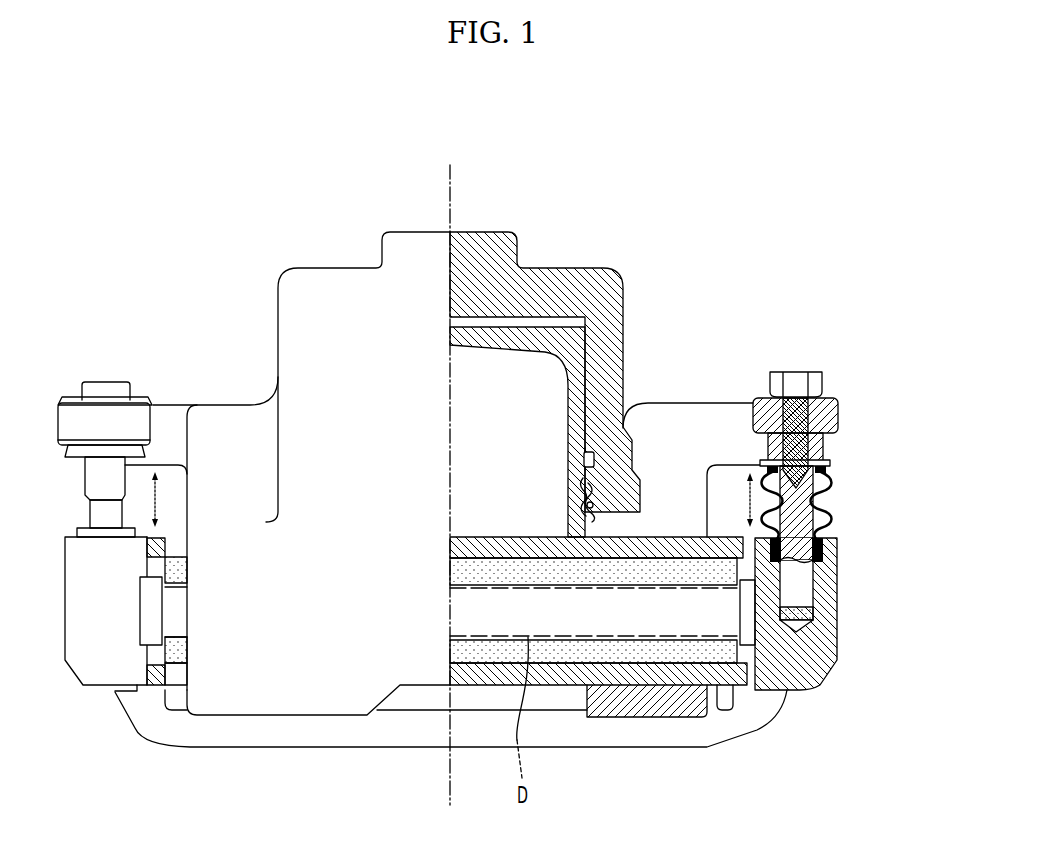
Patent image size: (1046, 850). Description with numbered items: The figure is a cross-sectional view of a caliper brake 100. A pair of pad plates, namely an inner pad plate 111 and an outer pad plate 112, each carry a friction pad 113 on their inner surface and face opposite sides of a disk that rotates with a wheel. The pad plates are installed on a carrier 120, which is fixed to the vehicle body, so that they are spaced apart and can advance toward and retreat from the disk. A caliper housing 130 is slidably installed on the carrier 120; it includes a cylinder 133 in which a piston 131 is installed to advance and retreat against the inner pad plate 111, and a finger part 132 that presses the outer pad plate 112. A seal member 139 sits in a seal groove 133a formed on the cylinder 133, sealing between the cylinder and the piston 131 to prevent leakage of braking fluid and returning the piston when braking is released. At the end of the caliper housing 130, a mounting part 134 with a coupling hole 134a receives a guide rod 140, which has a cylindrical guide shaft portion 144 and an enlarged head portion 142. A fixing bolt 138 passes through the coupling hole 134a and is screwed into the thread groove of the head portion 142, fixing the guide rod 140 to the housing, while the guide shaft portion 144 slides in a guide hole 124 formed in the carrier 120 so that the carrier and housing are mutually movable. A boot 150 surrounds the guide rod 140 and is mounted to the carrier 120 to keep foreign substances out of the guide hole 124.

The caliper brake 100 is at (285, 224).
The inner pad plate 111 is at (455, 548).
The outer pad plate 112 is at (457, 673).
The friction pad 113 is at (498, 568).
The carrier 120 is at (846, 690).
The guide hole 124 is at (808, 582).
The caliper housing 130 is at (630, 266).
The piston 131 is at (537, 332).
The finger part 132 is at (620, 712).
The cylinder 133 is at (575, 272).
The seal groove 133a is at (595, 465).
The mounting part 134 is at (837, 410).
The coupling hole 134a is at (805, 433).
The fixing bolt 138 is at (794, 374).
The seal member 139 is at (590, 450).
The guide rod 140 is at (898, 455).
The head portion 142 is at (825, 452).
The guide shaft portion 144 is at (800, 505).
The boot 150 is at (856, 513).